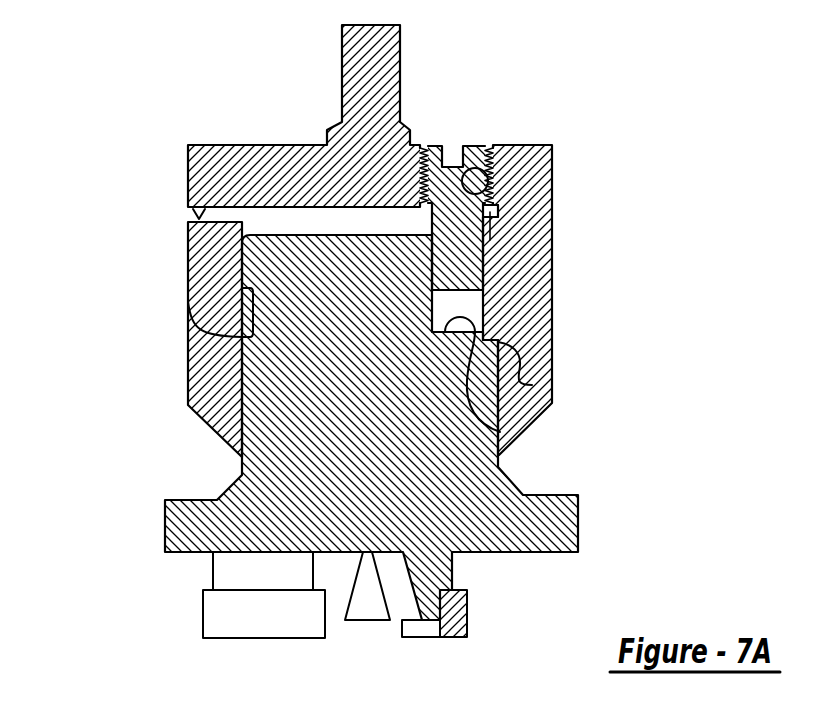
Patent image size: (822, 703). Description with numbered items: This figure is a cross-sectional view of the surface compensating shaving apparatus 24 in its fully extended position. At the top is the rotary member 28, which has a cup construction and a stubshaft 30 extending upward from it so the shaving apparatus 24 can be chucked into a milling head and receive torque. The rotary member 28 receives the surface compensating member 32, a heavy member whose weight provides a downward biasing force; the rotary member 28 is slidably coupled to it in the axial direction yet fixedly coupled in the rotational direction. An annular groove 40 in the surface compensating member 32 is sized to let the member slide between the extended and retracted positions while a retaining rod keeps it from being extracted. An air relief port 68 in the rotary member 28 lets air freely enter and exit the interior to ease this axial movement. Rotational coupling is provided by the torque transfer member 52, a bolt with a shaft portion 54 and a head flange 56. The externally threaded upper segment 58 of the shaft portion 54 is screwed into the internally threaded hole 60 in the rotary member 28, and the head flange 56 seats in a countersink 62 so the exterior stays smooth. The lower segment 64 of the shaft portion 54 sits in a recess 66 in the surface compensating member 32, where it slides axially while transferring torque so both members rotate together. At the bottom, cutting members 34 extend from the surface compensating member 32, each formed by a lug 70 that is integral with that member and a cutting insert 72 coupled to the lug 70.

The shaving apparatus 24 is at (322, 364).
The rotary member 28 is at (265, 142).
The stubshaft 30 is at (340, 97).
The surface compensating member 32 is at (173, 494).
The cutting member 34 is at (206, 577).
The annular groove 40 is at (188, 302).
The torque transfer member 52 is at (471, 136).
The shaft portion 54 is at (487, 267).
The head flange 56 is at (422, 146).
The upper segment 58 is at (493, 184).
The internally threaded hole 60 is at (495, 204).
The countersink 62 is at (489, 147).
The lower segment 64 is at (491, 216).
The recess 66 is at (500, 432).
The air relief port 68 is at (197, 217).
The lug 70 is at (343, 620).
The cutting insert 72 is at (283, 638).